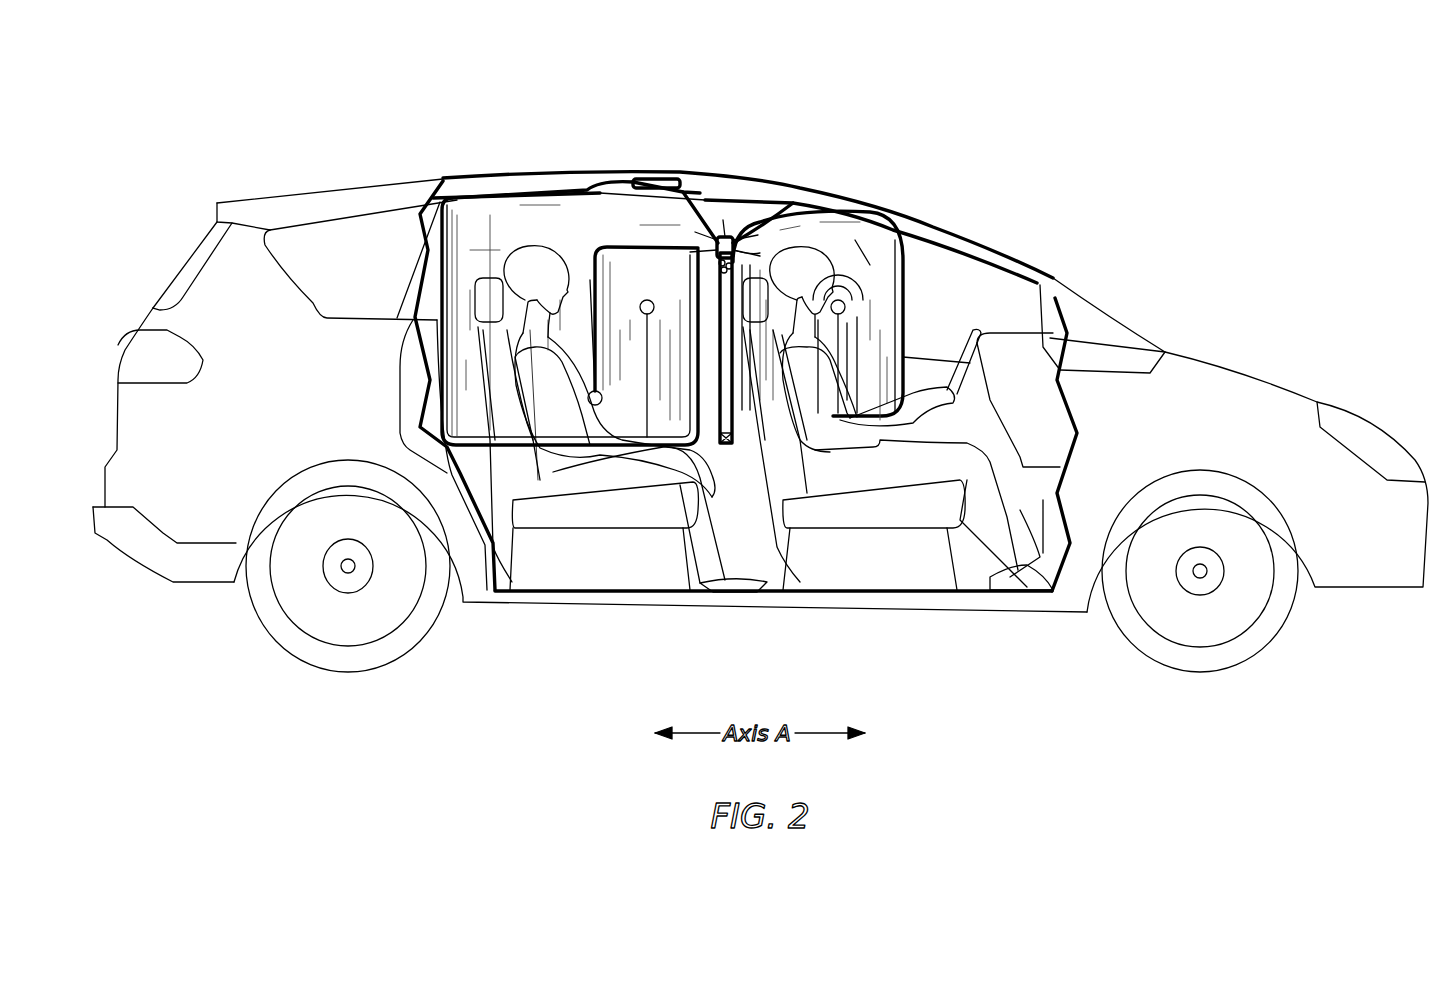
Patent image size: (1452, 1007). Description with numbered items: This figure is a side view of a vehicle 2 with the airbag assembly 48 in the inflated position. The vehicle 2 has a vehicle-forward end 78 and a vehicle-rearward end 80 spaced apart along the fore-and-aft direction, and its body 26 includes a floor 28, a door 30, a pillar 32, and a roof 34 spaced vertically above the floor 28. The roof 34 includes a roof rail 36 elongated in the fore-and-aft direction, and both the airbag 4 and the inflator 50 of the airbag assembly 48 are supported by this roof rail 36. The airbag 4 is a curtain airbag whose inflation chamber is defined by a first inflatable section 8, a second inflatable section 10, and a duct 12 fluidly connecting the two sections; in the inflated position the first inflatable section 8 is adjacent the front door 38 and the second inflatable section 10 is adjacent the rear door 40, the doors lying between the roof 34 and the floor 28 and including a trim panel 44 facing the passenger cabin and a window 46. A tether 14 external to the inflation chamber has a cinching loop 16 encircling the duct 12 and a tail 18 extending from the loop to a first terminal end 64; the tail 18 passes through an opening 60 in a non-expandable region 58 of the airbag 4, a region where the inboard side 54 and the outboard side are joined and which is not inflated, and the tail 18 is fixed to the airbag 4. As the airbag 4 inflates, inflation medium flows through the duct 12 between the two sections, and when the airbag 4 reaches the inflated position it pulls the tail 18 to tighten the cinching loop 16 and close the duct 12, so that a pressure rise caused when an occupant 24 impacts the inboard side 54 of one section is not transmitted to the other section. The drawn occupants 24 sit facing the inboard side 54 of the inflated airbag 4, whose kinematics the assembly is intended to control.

The vehicle 2 is at (298, 118).
The airbag 4 is at (513, 220).
The first inflatable section 8 is at (850, 245).
The second inflatable section 10 is at (560, 213).
The duct 12 is at (760, 235).
The tether 14 is at (722, 243).
The cinching loop 16 is at (717, 238).
The tail 18 is at (649, 440).
The vehicle occupant 24 is at (568, 477).
The body 26 is at (1170, 326).
The floor 28 is at (530, 606).
The door 30 is at (977, 427).
The pillar 32 is at (733, 212).
The roof 34 is at (387, 183).
The roof rail 36 is at (828, 200).
The front door 38 is at (997, 457).
The rear door 40 is at (413, 413).
The trim panel 44 is at (1023, 507).
The window 46 is at (993, 295).
The airbag assembly 48 is at (905, 260).
The inflator 50 is at (660, 173).
The inboard side 54 is at (862, 253).
The non-expandable region 58 is at (765, 445).
The opening 60 is at (760, 253).
The first terminal end 64 is at (728, 392).
The vehicle-forward end 78 is at (1375, 427).
The vehicle-rearward end 80 is at (168, 287).